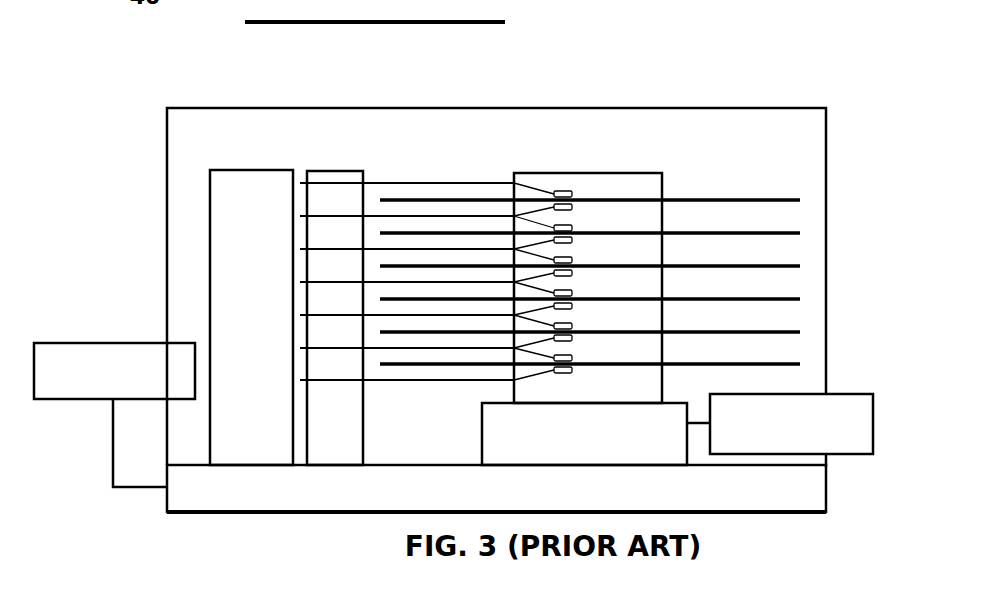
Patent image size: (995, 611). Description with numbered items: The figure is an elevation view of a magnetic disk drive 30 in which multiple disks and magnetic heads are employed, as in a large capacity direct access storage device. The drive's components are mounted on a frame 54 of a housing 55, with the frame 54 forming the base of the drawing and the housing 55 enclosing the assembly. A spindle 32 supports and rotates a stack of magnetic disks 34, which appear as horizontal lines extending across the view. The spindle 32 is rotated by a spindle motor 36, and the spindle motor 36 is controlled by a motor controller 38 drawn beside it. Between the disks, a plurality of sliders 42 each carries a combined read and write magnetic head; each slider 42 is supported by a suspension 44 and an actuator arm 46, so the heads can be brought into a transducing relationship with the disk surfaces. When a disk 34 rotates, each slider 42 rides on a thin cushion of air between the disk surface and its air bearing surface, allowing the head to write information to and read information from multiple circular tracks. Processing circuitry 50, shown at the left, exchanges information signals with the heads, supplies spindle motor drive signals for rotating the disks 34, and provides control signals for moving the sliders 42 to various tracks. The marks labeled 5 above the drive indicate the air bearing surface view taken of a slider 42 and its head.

The section line of FIG. 5 is at (270, 36).
The magnetic disk drive 30 is at (718, 168).
The spindle 32 is at (645, 173).
The magnetic disk 34 is at (778, 202).
The spindle motor 36 is at (576, 449).
The motor controller 38 is at (860, 454).
The slider 42 is at (568, 226).
The suspension 44 is at (530, 222).
The actuator arm 46 is at (466, 215).
The processing circuitry 50 is at (92, 343).
The frame 54 is at (285, 512).
The housing 55 is at (672, 108).